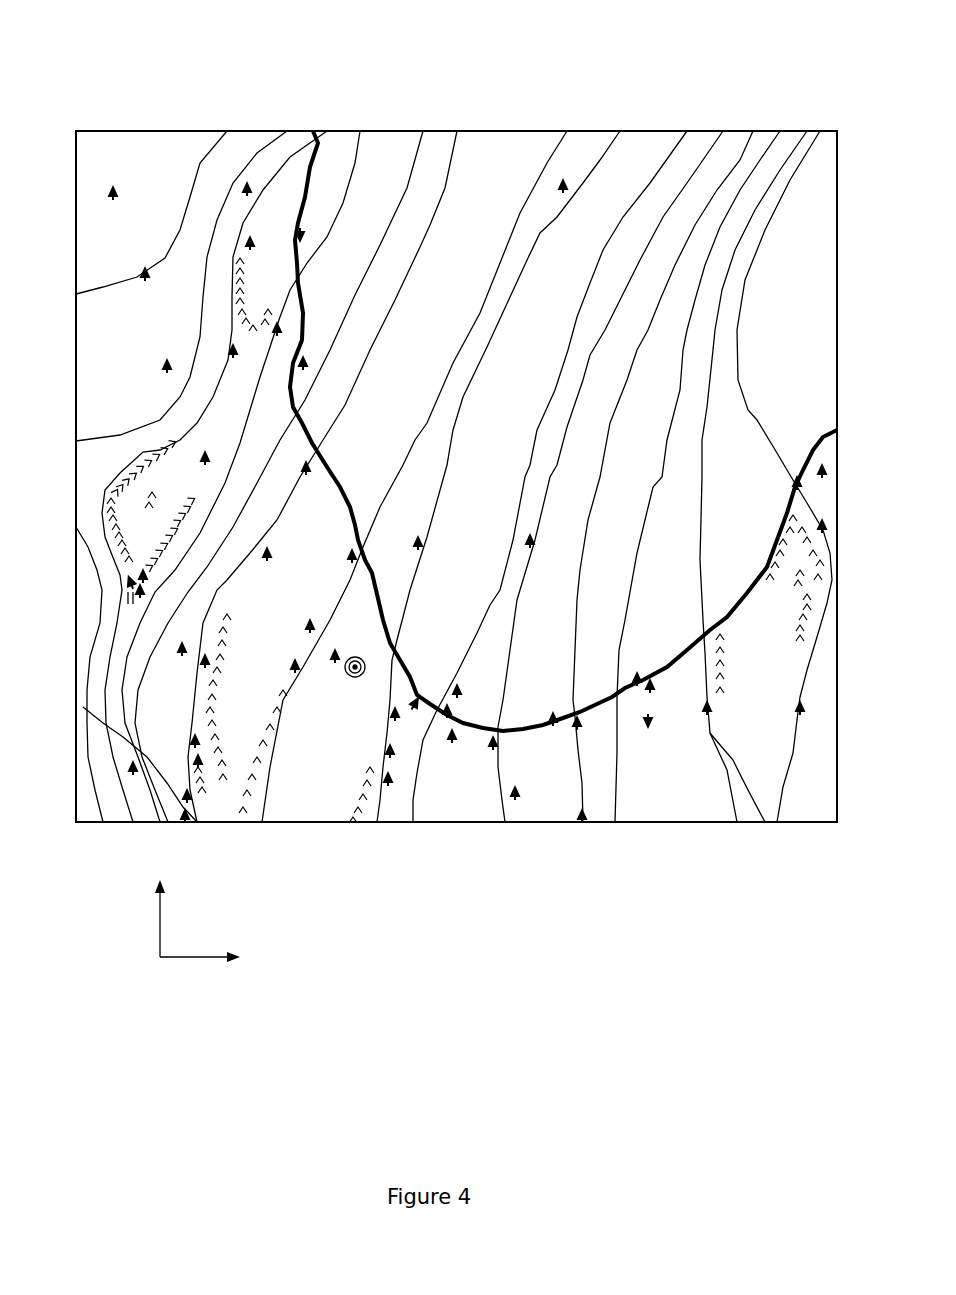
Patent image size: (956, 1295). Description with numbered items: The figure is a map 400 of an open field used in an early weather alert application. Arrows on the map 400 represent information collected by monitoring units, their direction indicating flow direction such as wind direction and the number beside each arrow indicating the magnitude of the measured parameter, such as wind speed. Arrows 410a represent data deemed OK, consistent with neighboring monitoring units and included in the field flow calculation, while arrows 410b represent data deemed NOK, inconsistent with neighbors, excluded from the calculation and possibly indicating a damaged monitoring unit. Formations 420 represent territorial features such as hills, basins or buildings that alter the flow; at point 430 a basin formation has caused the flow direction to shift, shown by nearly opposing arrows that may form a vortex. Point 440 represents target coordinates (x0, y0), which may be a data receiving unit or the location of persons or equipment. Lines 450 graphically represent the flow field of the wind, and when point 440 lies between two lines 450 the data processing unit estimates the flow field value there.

The map 400 is at (250, 49).
The arrows representing OK data 410a is at (570, 182).
The arrows representing NOK data 410b is at (248, 190).
The formations 420 is at (103, 493).
The point 430 is at (128, 590).
The point 440 is at (367, 674).
The lines 450 is at (197, 822).